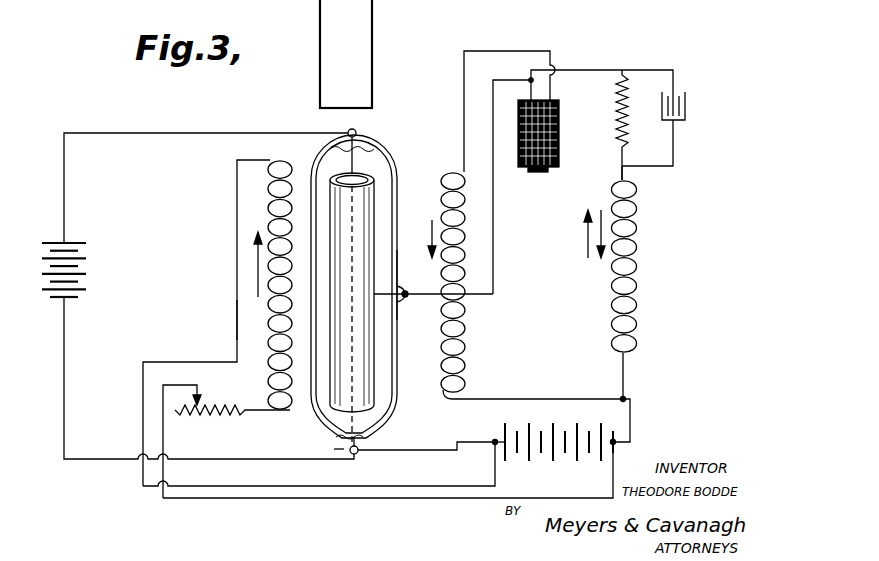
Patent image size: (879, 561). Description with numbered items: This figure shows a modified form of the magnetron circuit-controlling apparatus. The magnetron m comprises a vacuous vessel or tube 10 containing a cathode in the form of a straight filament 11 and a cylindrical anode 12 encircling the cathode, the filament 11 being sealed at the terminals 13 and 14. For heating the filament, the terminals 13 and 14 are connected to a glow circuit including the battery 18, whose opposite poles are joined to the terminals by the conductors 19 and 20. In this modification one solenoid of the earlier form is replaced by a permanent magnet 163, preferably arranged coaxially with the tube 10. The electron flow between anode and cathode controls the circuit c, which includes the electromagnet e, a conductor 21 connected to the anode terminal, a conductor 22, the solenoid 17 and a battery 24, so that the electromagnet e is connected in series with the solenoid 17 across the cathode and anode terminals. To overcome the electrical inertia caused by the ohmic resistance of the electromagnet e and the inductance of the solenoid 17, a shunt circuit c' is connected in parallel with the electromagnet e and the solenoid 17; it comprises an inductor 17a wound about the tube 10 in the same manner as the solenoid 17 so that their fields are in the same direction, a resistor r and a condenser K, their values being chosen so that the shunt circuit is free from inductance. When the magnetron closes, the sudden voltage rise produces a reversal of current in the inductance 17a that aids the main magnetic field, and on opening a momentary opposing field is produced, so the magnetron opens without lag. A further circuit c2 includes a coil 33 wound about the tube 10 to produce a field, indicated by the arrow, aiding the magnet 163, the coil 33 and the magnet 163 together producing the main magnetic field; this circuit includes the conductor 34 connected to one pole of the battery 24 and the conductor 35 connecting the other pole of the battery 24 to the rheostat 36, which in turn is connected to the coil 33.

The permanent magnet 163 is at (372, 41).
The conductor 19 is at (204, 133).
The battery 18 is at (44, 272).
The conductor 20 is at (107, 463).
The conductor 34 is at (237, 252).
The circuit c2 is at (237, 320).
The coil 33 is at (270, 206).
The rheostat 36 is at (222, 402).
The conductor 35 is at (290, 498).
The tube 10 is at (388, 158).
The magnetron m is at (398, 192).
The cylindrical anode 12 is at (376, 190).
The filament 11 is at (353, 160).
The terminal 13 is at (356, 131).
The terminal 14 is at (357, 454).
The solenoid 17 is at (466, 270).
The conductor 21 is at (493, 218).
The circuit c is at (512, 187).
The conductor 22 is at (500, 51).
The electromagnet e is at (559, 128).
The resistor r is at (614, 124).
The condenser K is at (688, 108).
The inductor 17a is at (637, 270).
The shunt circuit c' is at (644, 180).
The battery 24 is at (558, 410).